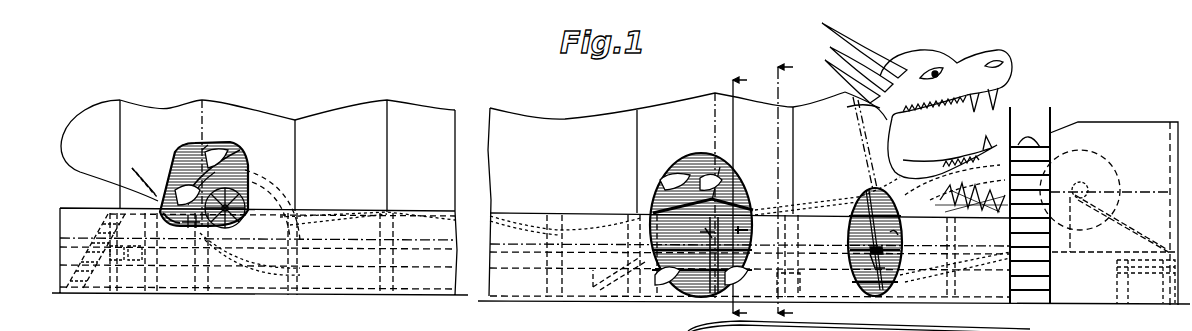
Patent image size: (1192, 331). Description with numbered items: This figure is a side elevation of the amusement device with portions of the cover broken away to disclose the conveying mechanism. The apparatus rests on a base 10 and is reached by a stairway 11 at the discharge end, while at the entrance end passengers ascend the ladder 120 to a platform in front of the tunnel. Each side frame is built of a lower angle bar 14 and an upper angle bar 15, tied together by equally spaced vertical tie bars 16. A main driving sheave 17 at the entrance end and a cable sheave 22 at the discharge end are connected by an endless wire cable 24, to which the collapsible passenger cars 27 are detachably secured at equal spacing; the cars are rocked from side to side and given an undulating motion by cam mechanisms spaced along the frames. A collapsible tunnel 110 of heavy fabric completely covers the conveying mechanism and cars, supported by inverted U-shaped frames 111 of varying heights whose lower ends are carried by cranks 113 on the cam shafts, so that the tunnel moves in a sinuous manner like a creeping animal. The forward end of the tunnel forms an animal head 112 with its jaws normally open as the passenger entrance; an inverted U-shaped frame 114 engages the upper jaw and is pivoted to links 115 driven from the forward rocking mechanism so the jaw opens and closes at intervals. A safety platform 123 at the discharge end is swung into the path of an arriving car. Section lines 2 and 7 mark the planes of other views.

The base box 10 is at (1118, 305).
The stairway 11 is at (110, 285).
The angle bar 14 is at (850, 242).
The upper angle bar 15 is at (748, 230).
The tie bars 16 is at (213, 283).
The main driving sheave 17 is at (1100, 165).
The cable sheave 22 is at (238, 173).
The endless wire cable 24 is at (742, 207).
The passenger car 27 is at (182, 150).
The collapsible tunnel 110 is at (594, 109).
The inverted U-shaped frames 111 is at (208, 145).
The animal head 112 is at (912, 52).
The cranks 113 is at (192, 222).
The inverted U-shaped frame 114 is at (895, 200).
The links 115 is at (890, 268).
The ladder 120 is at (1045, 297).
The safety platform 123 is at (173, 220).
The section line 7 is at (747, 198).
The section line 2 is at (791, 193).